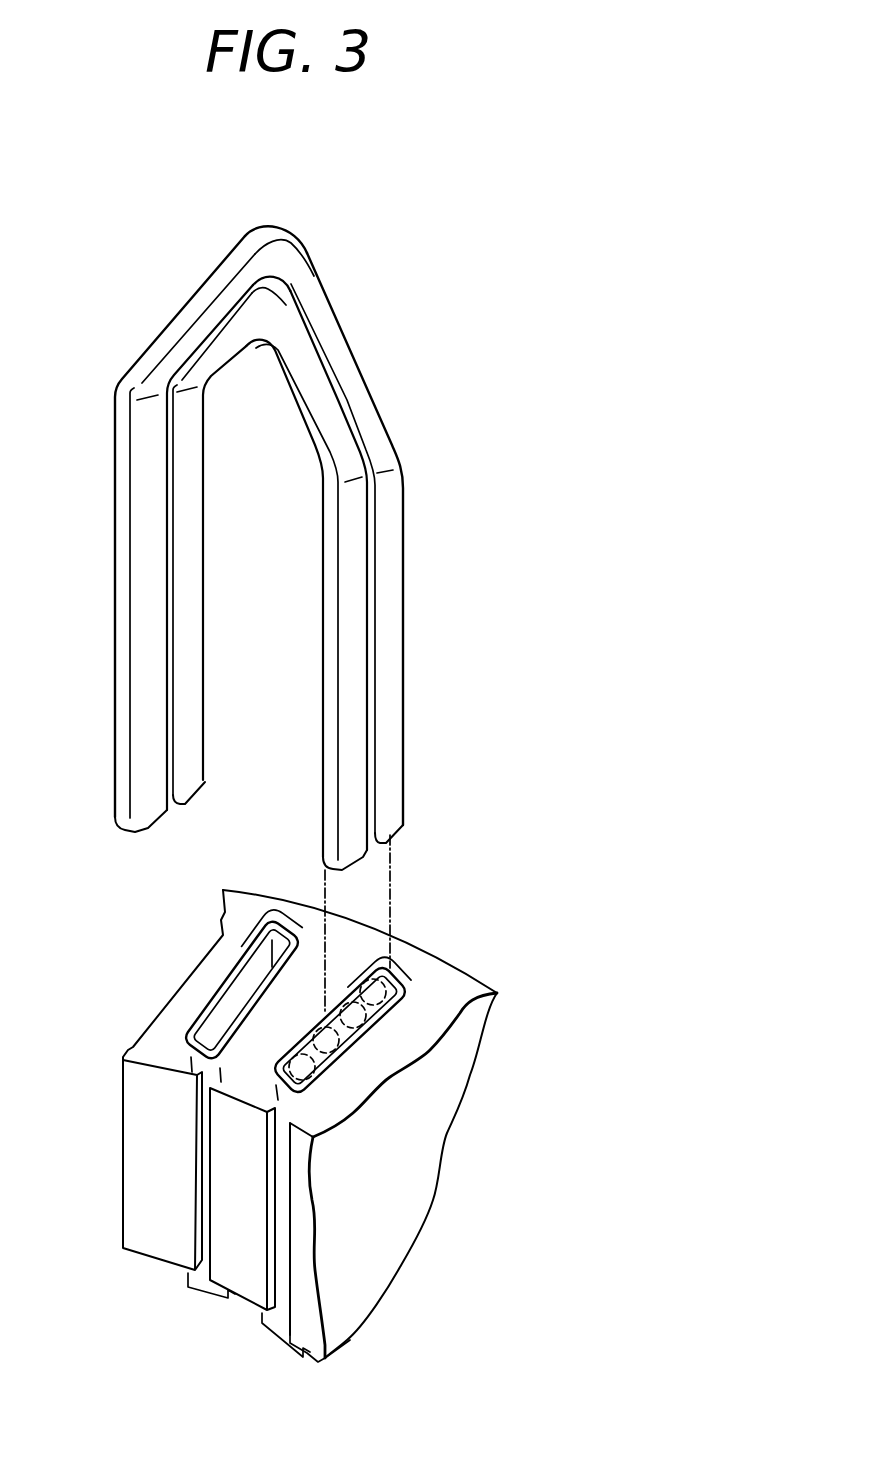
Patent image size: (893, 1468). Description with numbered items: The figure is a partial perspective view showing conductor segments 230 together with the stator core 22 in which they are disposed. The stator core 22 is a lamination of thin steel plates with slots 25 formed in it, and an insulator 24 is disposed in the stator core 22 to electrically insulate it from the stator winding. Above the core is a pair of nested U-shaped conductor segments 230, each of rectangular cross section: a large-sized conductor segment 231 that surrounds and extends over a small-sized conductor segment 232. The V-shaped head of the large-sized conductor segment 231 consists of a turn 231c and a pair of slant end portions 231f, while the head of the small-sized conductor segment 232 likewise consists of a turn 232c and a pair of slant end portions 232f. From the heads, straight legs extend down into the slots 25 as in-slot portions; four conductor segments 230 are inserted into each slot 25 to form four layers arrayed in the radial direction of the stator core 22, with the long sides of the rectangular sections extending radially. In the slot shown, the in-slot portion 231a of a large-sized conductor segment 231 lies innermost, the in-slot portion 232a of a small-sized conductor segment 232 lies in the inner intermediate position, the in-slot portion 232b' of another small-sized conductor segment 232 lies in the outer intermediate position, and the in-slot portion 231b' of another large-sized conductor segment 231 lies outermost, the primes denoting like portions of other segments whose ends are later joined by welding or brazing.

The stator core 22 is at (460, 987).
The insulator 24 is at (403, 968).
The slot 25 is at (208, 1172).
The conductor segment 230 is at (414, 390).
The large-sized conductor segment 231 is at (340, 350).
The small-sized conductor segment 232 is at (347, 453).
The in-slot portion of large-sized conductor segment 231a is at (307, 1073).
The in-slot portion of small-sized conductor segment 232a is at (331, 1046).
The in-slot portion of another large-sized conductor segment 231b' is at (475, 1039).
The in-slot portion of another small-sized conductor segment 232b' is at (457, 1086).
The turn of large-sized conductor segment 231c is at (280, 243).
The turn of small-sized conductor segment 232c is at (273, 305).
The slant end portion of large-sized conductor segment 231f is at (208, 317).
The slant end portion of small-sized conductor segment 232f is at (205, 368).